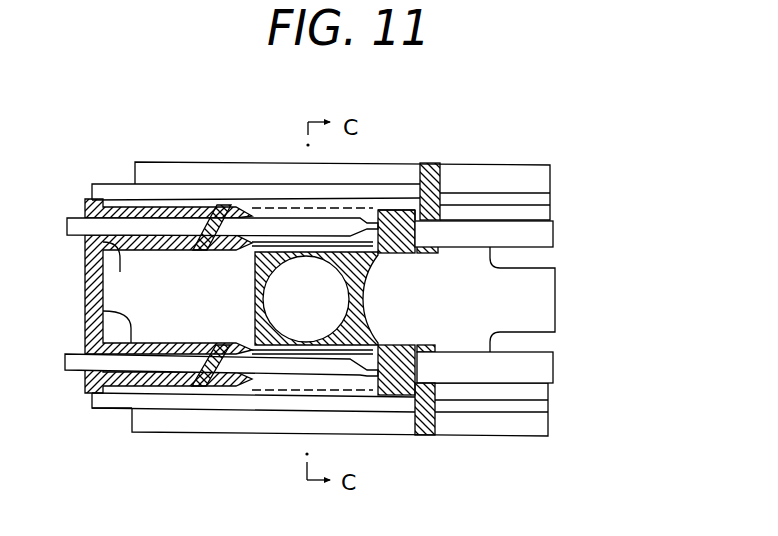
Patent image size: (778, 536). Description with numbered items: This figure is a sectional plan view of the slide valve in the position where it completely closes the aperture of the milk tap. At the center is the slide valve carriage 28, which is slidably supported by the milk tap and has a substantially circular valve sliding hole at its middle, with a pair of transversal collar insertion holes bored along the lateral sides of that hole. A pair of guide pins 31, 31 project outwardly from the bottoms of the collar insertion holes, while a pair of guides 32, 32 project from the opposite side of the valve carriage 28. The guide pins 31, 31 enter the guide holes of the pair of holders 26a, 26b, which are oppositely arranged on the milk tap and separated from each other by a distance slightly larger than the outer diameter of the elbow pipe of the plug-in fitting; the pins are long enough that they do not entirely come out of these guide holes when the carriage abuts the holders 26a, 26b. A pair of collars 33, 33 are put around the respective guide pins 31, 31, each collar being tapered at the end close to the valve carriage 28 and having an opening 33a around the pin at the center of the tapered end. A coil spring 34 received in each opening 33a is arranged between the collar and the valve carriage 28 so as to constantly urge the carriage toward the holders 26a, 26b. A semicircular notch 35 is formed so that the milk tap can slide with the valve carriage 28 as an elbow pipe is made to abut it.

The holder 26a is at (440, 180).
The holder 26b is at (436, 420).
The slide valve carriage 28 is at (253, 302).
The guide pin 31 is at (72, 218).
The guide 32 is at (546, 232).
The collar 33 is at (85, 264).
The opening 33a is at (203, 394).
The coil spring 34 is at (222, 222).
The semicircular notch 35 is at (373, 317).